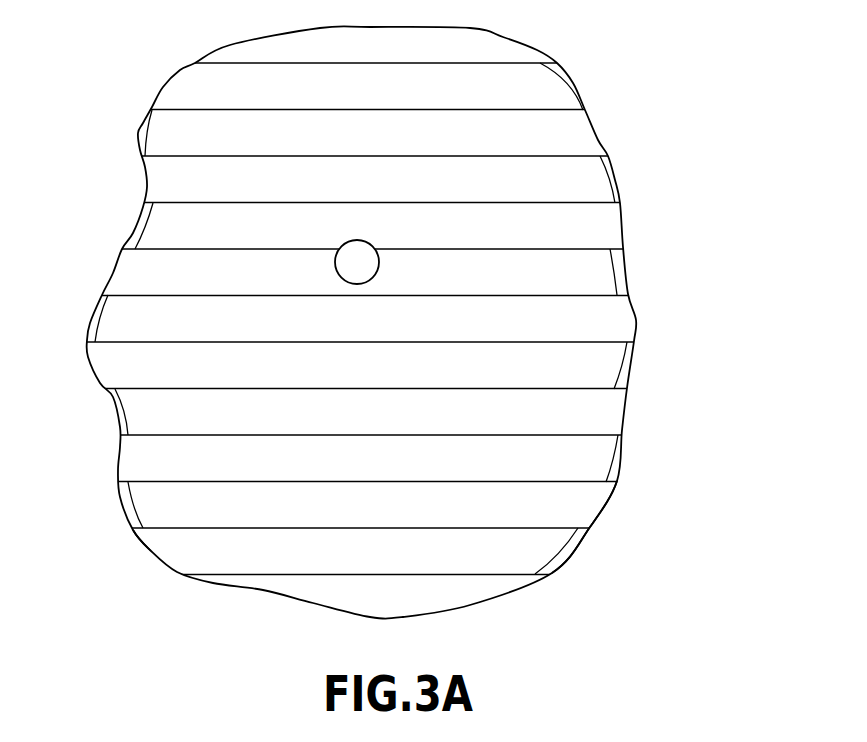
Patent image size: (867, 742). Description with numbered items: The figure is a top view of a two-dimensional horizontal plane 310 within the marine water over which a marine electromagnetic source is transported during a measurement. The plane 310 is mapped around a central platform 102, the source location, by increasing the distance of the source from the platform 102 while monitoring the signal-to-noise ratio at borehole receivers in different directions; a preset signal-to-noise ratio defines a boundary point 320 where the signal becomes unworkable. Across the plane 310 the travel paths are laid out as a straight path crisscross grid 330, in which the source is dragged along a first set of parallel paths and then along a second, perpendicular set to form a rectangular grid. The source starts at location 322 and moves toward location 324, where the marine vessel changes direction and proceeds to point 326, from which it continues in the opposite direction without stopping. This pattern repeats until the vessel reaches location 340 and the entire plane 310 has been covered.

The horizontal plane 310 is at (163, 85).
The location 340 is at (198, 63).
The boundary point 320 is at (592, 293).
The straight path crisscross grid 330 is at (563, 428).
The point 326 is at (597, 527).
The location 324 is at (552, 575).
The location 322 is at (178, 572).
The platform 102 is at (355, 240).